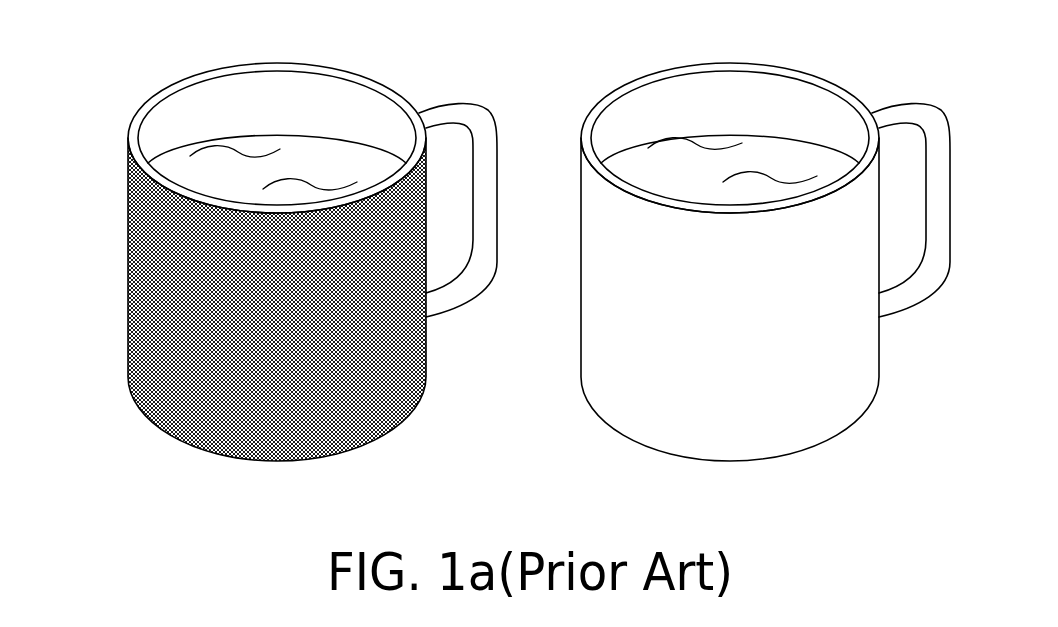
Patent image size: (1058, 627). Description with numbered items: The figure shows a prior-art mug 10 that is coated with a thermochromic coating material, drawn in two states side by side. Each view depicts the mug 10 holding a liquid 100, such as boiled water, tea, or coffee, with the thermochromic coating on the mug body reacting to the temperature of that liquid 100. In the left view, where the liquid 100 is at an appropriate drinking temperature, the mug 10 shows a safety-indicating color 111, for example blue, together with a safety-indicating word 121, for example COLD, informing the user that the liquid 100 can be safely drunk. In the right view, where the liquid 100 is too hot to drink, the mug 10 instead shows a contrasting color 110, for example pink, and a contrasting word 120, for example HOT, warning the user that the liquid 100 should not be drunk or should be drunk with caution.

The mug 10 is at (499, 230).
The liquid 100 is at (273, 135).
The contrasting color 110 is at (612, 254).
The safety-indicating color 111 is at (152, 255).
The word 120 is at (648, 318).
The safety-indicating word 121 is at (160, 318).